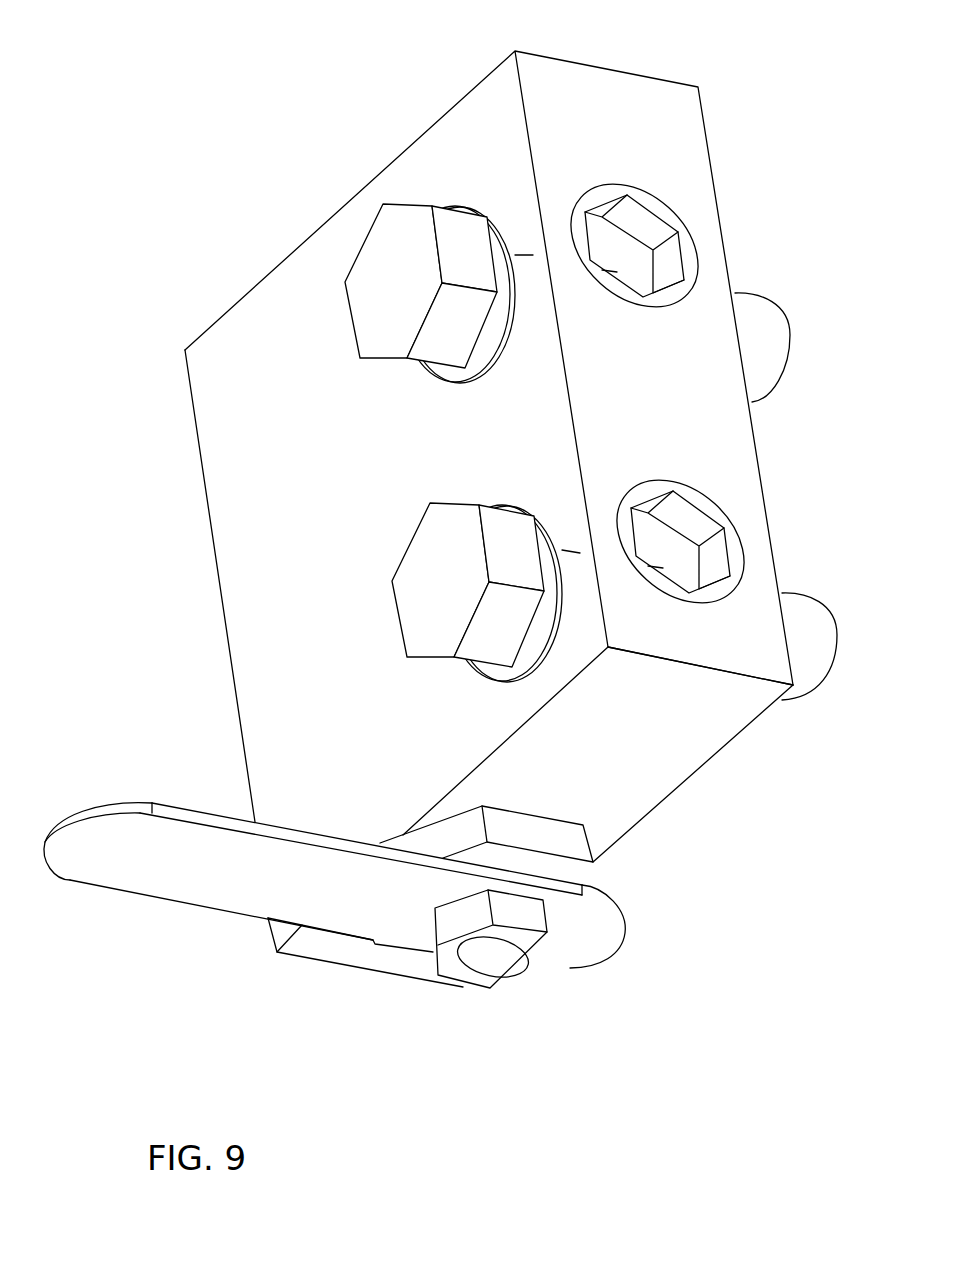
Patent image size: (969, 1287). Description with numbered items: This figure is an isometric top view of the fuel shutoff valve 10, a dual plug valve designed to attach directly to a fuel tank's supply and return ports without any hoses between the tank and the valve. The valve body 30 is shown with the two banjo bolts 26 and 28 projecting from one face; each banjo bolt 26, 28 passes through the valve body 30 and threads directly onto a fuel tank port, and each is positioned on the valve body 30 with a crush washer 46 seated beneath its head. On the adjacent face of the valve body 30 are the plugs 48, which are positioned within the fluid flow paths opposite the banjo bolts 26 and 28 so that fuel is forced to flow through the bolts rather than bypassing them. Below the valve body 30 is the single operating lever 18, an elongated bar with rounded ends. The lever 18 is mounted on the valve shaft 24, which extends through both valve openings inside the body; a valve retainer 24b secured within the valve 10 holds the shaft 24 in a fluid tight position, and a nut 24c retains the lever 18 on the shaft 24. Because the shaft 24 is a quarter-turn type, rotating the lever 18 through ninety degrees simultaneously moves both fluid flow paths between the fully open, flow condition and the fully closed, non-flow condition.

The fuel shutoff valve 10 is at (680, 778).
The lever 18 is at (605, 925).
The valve shaft 24 is at (513, 963).
The valve retainer 24b is at (587, 873).
The nut 24c is at (538, 953).
The banjo bolt 26 is at (415, 615).
The banjo bolt 28 is at (368, 337).
The valve body 30 is at (720, 748).
The crush washer 46 is at (487, 352).
The plug 48 is at (687, 263).